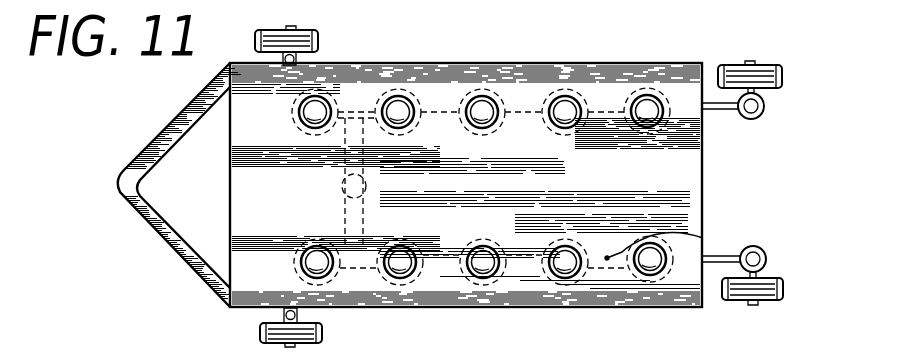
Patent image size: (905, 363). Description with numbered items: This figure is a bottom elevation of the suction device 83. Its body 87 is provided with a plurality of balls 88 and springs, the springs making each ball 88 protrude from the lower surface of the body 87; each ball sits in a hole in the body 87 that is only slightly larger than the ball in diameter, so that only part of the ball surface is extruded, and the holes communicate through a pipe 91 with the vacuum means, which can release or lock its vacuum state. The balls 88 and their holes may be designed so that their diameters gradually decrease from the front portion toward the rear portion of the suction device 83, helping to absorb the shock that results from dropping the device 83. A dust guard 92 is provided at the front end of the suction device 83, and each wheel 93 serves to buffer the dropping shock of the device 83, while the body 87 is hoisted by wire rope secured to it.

The suction device 83 is at (728, 146).
The body 87 is at (693, 197).
The balls 88 is at (645, 102).
The pipe 91 is at (704, 239).
The dust guard 92 is at (158, 136).
The wheel 93 is at (318, 38).